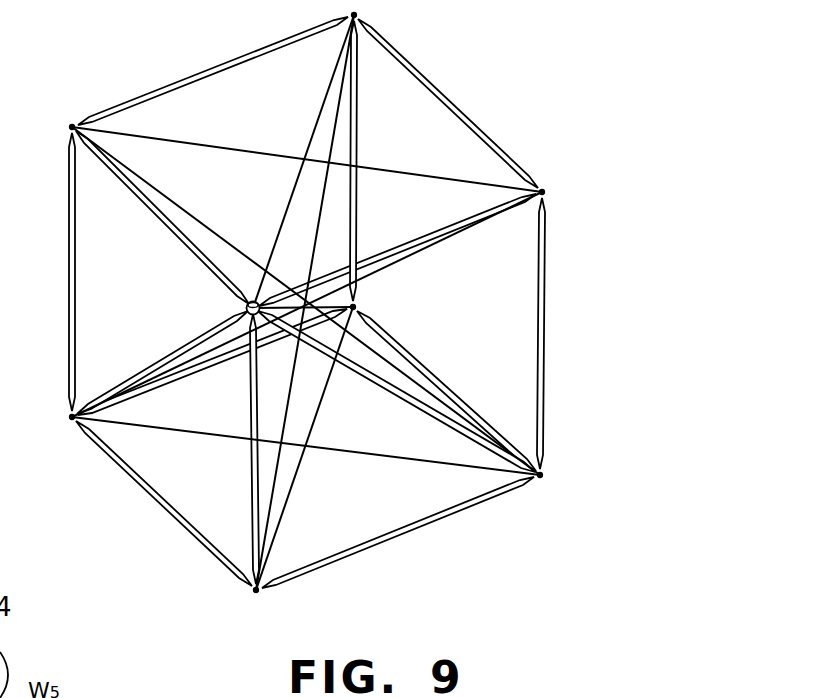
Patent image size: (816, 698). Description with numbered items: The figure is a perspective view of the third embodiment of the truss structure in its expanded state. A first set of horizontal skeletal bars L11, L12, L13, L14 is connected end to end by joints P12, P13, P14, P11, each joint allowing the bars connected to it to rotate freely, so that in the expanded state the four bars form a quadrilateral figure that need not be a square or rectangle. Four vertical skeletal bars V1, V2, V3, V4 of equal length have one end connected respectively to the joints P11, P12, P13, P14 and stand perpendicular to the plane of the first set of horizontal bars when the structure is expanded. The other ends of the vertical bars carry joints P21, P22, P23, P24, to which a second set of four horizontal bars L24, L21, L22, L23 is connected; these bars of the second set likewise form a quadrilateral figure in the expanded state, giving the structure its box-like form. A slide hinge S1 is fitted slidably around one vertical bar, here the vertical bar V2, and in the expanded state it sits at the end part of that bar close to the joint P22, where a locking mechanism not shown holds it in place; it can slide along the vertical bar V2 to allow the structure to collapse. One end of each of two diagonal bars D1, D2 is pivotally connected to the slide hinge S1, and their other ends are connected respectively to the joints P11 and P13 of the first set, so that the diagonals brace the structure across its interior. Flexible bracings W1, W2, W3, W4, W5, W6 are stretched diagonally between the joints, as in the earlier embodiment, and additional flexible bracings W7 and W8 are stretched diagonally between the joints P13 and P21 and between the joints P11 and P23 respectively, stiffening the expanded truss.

The joint P11 is at (72, 420).
The joint P12 is at (257, 596).
The joint P13 is at (541, 482).
The joint P14 is at (360, 307).
The joint P21 is at (69, 127).
The joint P22 is at (252, 298).
The joint P23 is at (544, 190).
The joint P24 is at (358, 15).
The horizontal skeletal bar L11 is at (150, 491).
The horizontal skeletal bar L12 is at (391, 537).
The horizontal skeletal bar L13 is at (455, 395).
The horizontal skeletal bar L14 is at (195, 369).
The horizontal bar L21 is at (165, 222).
The horizontal bar L22 is at (465, 217).
The horizontal bar L23 is at (458, 112).
The horizontal bar L24 is at (248, 56).
The vertical skeletal bar V1 is at (68, 262).
The vertical skeletal bar V2 is at (252, 480).
The vertical skeletal bar V3 is at (545, 362).
The vertical skeletal bar V4 is at (357, 140).
The diagonal bar D1 is at (178, 352).
The diagonal bar D2 is at (400, 392).
The flexible bracing W1 is at (440, 463).
The flexible bracing W2 is at (288, 487).
The flexible bracing W3 is at (255, 153).
The flexible bracing W4 is at (315, 125).
The flexible bracing W5 is at (288, 392).
The flexible bracing W6 is at (318, 280).
The flexible bracing W7 is at (393, 337).
The flexible bracing W8 is at (410, 256).
The slide hinge S1 is at (246, 302).